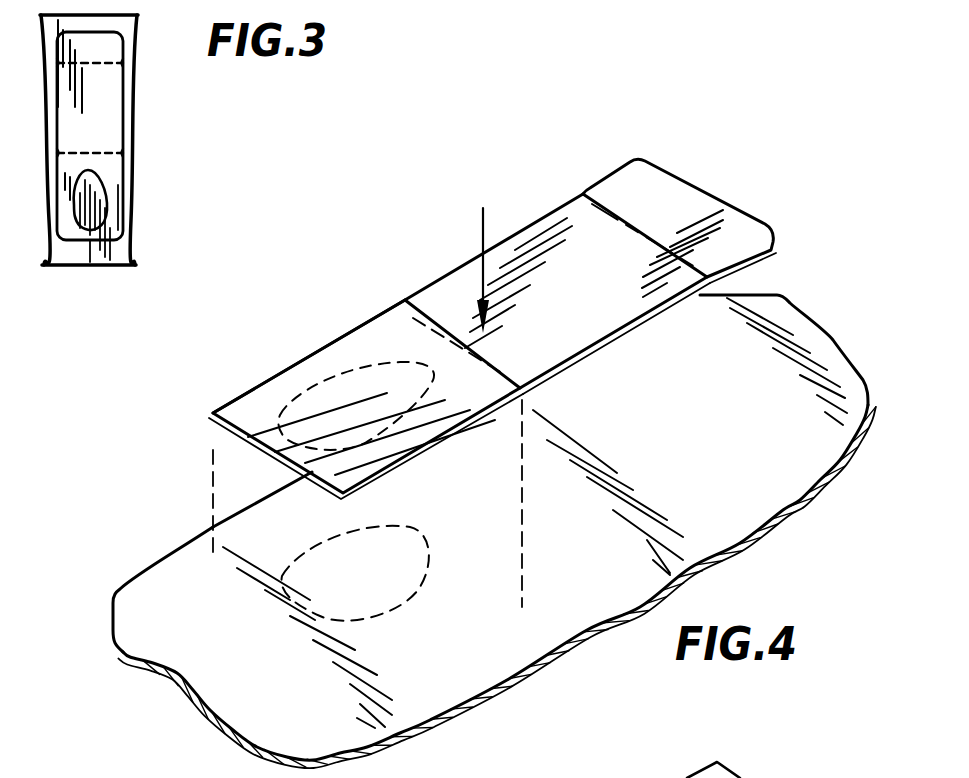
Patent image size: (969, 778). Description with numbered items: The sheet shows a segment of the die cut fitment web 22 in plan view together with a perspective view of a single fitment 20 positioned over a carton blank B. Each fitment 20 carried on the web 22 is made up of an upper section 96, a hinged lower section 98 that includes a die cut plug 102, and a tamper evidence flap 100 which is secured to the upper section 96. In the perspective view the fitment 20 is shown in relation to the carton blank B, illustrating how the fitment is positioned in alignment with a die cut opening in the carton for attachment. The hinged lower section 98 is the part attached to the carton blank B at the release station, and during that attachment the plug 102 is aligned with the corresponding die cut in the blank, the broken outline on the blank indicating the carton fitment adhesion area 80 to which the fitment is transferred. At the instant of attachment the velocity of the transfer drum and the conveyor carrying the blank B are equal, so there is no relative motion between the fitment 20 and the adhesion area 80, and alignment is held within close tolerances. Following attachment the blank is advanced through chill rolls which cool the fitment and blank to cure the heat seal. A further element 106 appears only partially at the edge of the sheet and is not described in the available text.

In FIG. 3, the fitment 20 is at (124, 85).
In FIG. 4, the fitment 20 is at (373, 328).
In FIG. 3, the die cut web 22 is at (148, 184).
In FIG. 4, the carton fitment adhesion area 80 is at (385, 600).
In FIG. 4, the upper section 96 is at (548, 232).
In FIG. 4, the hinged lower section 98 is at (243, 400).
In FIG. 4, the tamper evidence flap 100 is at (622, 192).
In FIG. 4, the die cut plug 102 is at (228, 441).
In FIG. 4, the apparatus portion 106 is at (799, 777).
In FIG. 4, the carton blank B is at (140, 594).